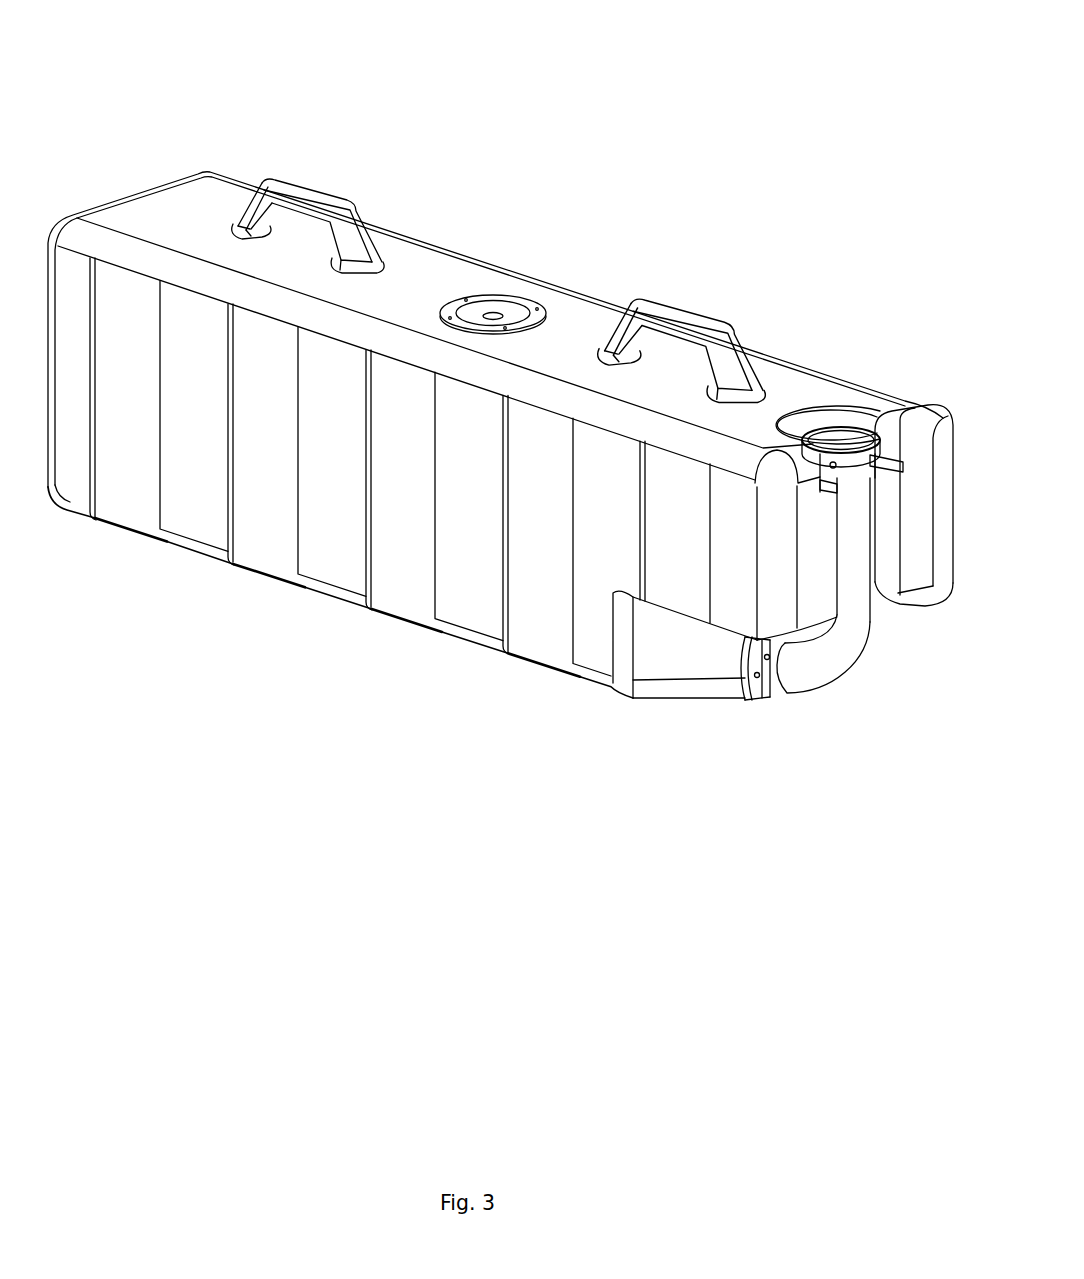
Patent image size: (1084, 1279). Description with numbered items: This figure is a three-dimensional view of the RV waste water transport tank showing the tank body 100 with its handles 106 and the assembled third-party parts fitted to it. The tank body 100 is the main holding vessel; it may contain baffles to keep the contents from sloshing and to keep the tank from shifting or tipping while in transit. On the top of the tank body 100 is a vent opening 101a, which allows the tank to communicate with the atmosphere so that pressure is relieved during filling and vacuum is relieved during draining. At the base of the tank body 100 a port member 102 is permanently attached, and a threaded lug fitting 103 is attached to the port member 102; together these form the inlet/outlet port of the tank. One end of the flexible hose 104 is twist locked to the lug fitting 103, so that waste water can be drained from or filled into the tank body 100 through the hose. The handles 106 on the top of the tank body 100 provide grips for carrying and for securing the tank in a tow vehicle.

The tank body 100 is at (337, 527).
The fill cap 101a is at (497, 305).
The port member 102 is at (733, 690).
The threaded lug fitting 103 is at (782, 697).
The flexible hose 104 is at (867, 633).
The handle 106 is at (305, 180).